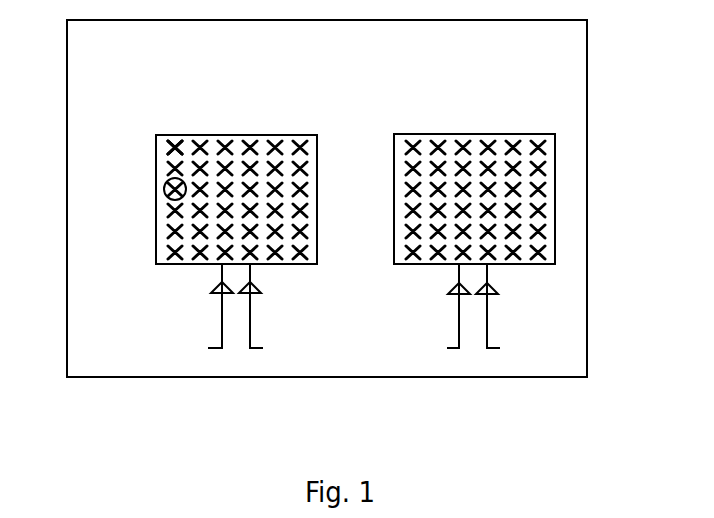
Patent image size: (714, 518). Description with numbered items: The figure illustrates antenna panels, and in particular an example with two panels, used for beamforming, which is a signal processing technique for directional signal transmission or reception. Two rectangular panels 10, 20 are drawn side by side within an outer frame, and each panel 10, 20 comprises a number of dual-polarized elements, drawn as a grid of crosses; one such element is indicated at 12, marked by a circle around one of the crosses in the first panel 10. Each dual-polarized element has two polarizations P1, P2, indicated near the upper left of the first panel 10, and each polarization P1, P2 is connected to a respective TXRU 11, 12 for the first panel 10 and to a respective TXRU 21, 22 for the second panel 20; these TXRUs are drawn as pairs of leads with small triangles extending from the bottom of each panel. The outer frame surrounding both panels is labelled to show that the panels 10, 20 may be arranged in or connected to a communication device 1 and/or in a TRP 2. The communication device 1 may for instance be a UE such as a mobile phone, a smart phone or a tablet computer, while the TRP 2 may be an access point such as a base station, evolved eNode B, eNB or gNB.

The communication device 1 is at (577, 200).
The TRP 2 is at (327, 198).
The panel 10 is at (245, 134).
The TXRU 11 is at (222, 330).
The dual-polarized element 12 is at (250, 313).
The panel 20 is at (462, 134).
The TXRU 21 is at (459, 322).
The TXRU 22 is at (488, 320).
The polarization P1 is at (156, 137).
The polarization P2 is at (184, 147).